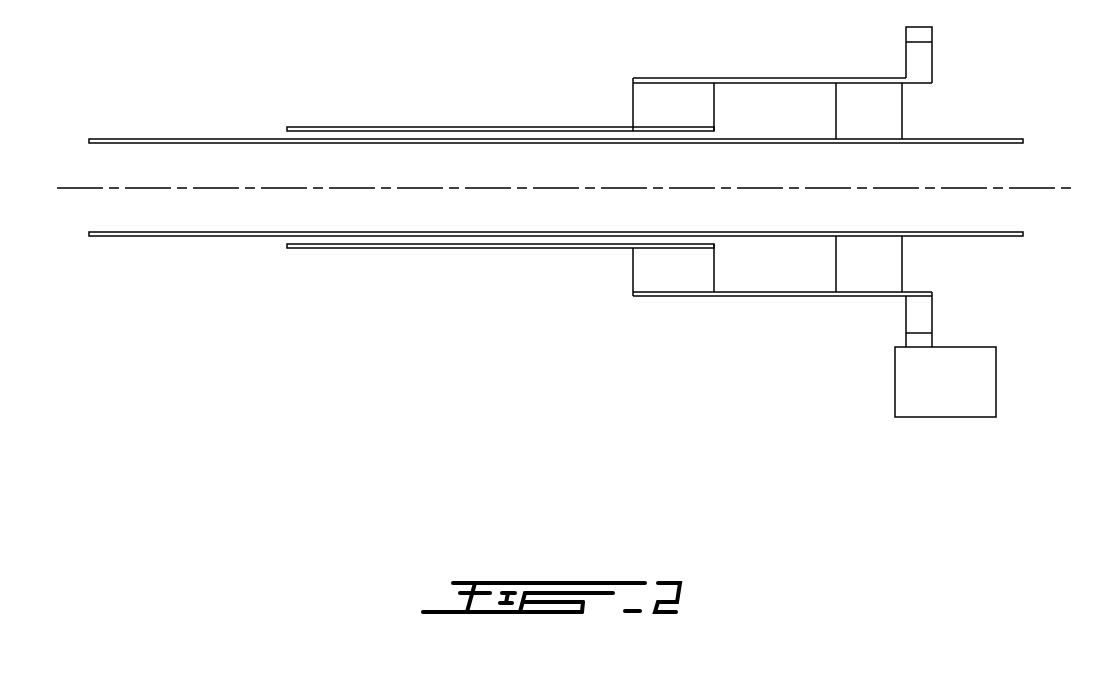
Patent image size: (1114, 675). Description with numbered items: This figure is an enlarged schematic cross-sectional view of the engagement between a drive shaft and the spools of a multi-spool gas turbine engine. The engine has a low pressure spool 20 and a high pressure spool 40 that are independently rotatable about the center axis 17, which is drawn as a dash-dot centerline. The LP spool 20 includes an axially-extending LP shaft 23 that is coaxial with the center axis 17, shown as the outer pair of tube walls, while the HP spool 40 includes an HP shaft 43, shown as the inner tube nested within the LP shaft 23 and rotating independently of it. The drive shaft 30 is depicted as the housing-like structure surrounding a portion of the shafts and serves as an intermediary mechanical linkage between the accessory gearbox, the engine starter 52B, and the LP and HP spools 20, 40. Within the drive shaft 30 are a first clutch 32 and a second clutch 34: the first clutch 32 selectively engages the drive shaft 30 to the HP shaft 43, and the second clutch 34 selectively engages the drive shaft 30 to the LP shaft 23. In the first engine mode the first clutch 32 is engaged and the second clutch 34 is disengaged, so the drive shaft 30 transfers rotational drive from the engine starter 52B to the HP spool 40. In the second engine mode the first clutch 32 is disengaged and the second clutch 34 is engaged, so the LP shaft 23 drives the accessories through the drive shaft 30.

The center axis 17 is at (1043, 190).
The low pressure spool 20 is at (556, 280).
The LP shaft 23 is at (222, 237).
The HP shaft 43 is at (543, 266).
The high pressure spool 40 is at (500, 279).
The drive shaft 30 is at (809, 214).
The first clutch 32 is at (714, 278).
The second clutch 34 is at (902, 270).
The engine starter 52B is at (947, 417).